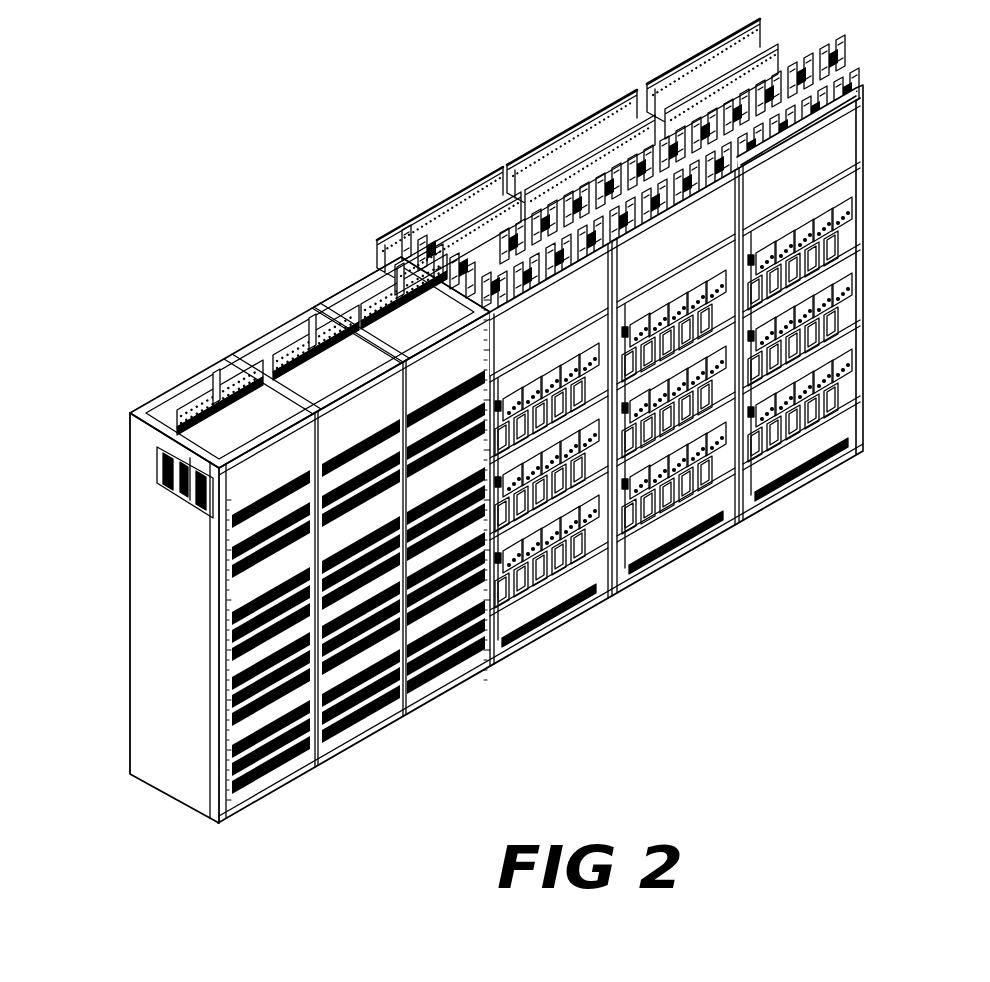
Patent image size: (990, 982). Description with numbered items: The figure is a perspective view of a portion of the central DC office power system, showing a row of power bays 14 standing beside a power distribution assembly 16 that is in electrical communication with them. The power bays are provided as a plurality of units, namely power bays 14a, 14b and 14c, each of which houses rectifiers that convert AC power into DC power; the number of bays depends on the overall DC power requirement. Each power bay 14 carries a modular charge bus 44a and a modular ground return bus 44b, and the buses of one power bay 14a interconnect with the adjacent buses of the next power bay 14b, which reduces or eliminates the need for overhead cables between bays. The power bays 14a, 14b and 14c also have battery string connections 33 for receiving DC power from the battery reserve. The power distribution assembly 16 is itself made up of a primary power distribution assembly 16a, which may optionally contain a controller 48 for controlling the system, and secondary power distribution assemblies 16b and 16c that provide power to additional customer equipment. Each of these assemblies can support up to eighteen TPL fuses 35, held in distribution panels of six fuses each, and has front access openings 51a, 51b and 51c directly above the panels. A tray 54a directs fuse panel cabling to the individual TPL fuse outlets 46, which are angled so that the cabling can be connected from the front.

The power bay 14 is at (448, 557).
The power bay 14a is at (300, 777).
The power bay 14b is at (373, 735).
The power bay 14c is at (453, 690).
The power distribution assembly 16 is at (677, 368).
The primary power distribution assembly 16a is at (563, 620).
The secondary power distribution assembly 16b is at (687, 553).
The secondary power distribution assembly 16c is at (862, 352).
The battery string connections 33 is at (197, 425).
The controller 48 is at (377, 273).
The tray 54a is at (407, 232).
The modular charge bus 44a is at (183, 500).
The modular ground return bus 44b is at (160, 488).
The front access opening 51a is at (850, 203).
The front access opening 51b is at (840, 283).
The front access opening 51c is at (843, 360).
The TPL fuse 35 is at (843, 257).
The TPL fuse outlet 46 is at (845, 313).